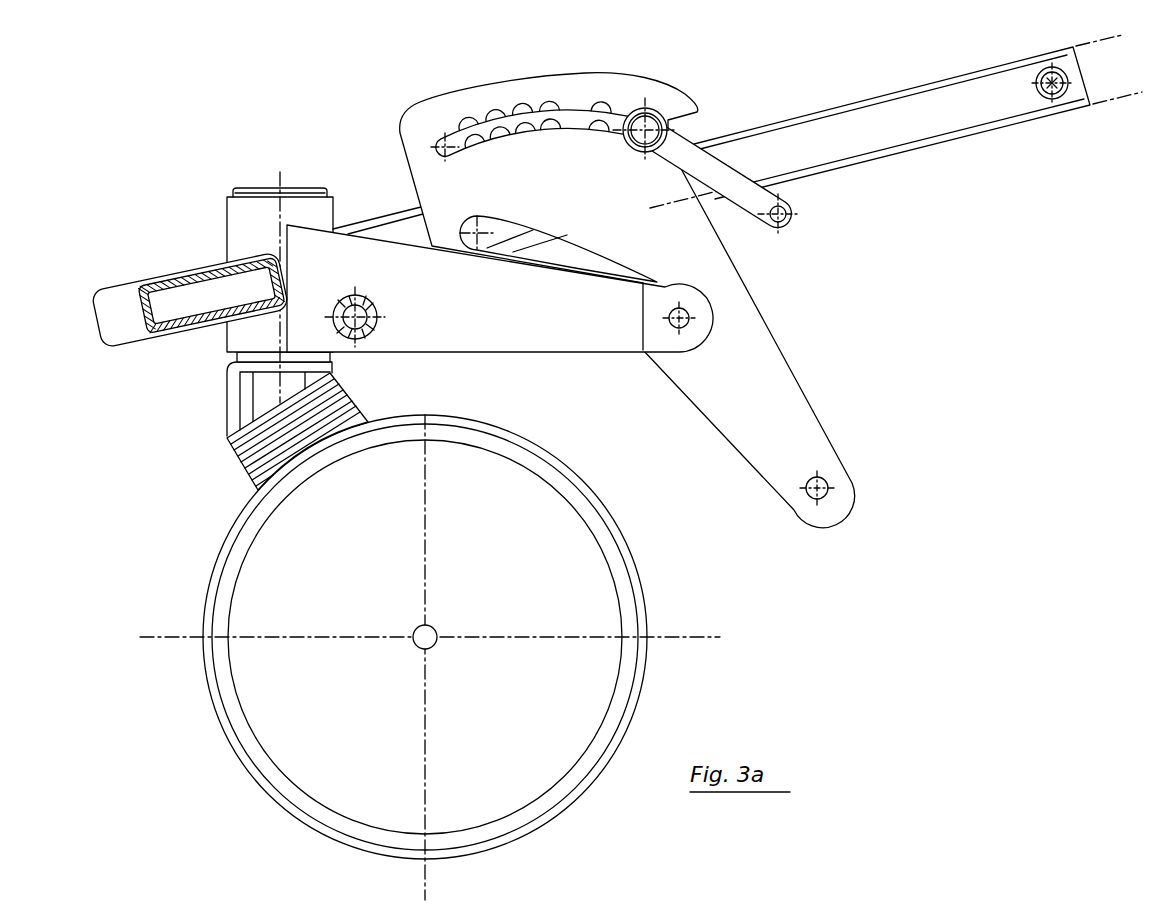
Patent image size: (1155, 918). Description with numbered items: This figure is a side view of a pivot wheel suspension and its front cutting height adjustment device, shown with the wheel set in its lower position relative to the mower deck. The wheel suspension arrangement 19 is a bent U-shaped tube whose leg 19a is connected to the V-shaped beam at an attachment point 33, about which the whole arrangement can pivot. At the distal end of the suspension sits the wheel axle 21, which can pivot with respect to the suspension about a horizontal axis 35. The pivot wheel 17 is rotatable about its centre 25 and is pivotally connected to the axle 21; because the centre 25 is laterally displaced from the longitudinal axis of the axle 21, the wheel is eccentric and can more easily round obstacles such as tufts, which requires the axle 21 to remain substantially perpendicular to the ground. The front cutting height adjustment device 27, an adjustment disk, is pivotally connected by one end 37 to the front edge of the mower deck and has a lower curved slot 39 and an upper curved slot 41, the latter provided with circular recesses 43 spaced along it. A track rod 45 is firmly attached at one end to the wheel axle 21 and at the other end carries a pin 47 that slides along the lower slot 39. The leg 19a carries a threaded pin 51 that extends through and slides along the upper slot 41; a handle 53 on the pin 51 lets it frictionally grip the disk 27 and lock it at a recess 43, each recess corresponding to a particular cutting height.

The pivot wheel 17 is at (640, 597).
The wheel suspension arrangement 19 is at (896, 138).
The leg 19a is at (827, 130).
The wheel axle 21 is at (278, 220).
The centre of the pivot wheel 25 is at (432, 628).
The front cutting height adjustment device 27 is at (790, 322).
The attachment point 33 is at (1060, 92).
The horizontal axis 35 is at (378, 315).
The end of the adjustment disk 37 is at (846, 480).
The lower curved slot 39 is at (600, 257).
The upper curved slot 41 is at (567, 123).
The circular recesses 43 is at (518, 112).
The track rod 45 is at (515, 338).
The pin 47 is at (679, 323).
The pin 51 is at (690, 112).
The handle 53 is at (797, 213).